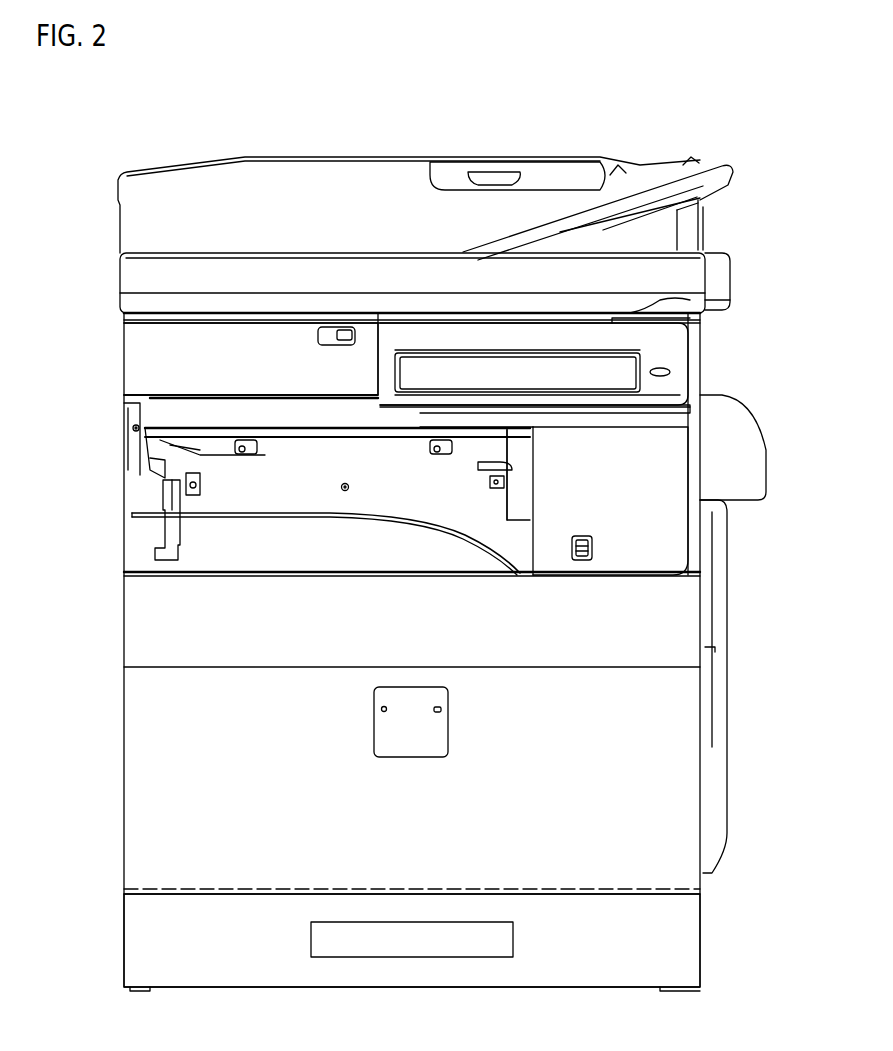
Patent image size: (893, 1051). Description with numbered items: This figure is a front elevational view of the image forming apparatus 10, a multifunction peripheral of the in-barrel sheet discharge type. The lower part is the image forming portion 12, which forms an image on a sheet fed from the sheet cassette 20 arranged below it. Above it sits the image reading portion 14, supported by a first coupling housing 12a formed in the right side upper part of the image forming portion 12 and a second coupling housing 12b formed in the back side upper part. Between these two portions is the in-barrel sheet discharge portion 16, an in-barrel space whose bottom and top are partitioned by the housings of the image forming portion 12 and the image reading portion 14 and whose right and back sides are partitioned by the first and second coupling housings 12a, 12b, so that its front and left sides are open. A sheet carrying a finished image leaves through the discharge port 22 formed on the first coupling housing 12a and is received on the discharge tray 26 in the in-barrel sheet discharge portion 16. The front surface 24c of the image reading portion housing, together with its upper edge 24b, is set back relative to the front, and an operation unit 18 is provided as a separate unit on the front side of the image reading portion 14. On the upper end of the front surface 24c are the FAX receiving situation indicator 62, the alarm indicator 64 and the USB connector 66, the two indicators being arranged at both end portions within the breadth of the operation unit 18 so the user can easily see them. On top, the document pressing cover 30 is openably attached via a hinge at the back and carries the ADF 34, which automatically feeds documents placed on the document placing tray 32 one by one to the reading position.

The image forming apparatus 10 is at (249, 67).
The image forming portion 12 is at (120, 745).
The first coupling housing 12a is at (665, 448).
The second coupling housing 12b is at (133, 467).
The image reading portion 14 is at (122, 366).
The in-barrel sheet discharge portion 16 is at (145, 495).
The operation unit 18 is at (700, 398).
The sheet cassette 20 is at (145, 937).
The discharge port 22 is at (482, 474).
The upper frame rail 24b is at (147, 313).
The front surface 24c is at (145, 350).
The discharge tray 26 is at (278, 515).
The document pressing cover 30 is at (145, 285).
The document placing tray 32 is at (633, 180).
The ADF (automatic document feeder) 34 is at (235, 207).
The FAX receiving situation indicator 62 is at (420, 308).
The alarm indicator 64 is at (633, 311).
The USB connector 66 is at (340, 343).